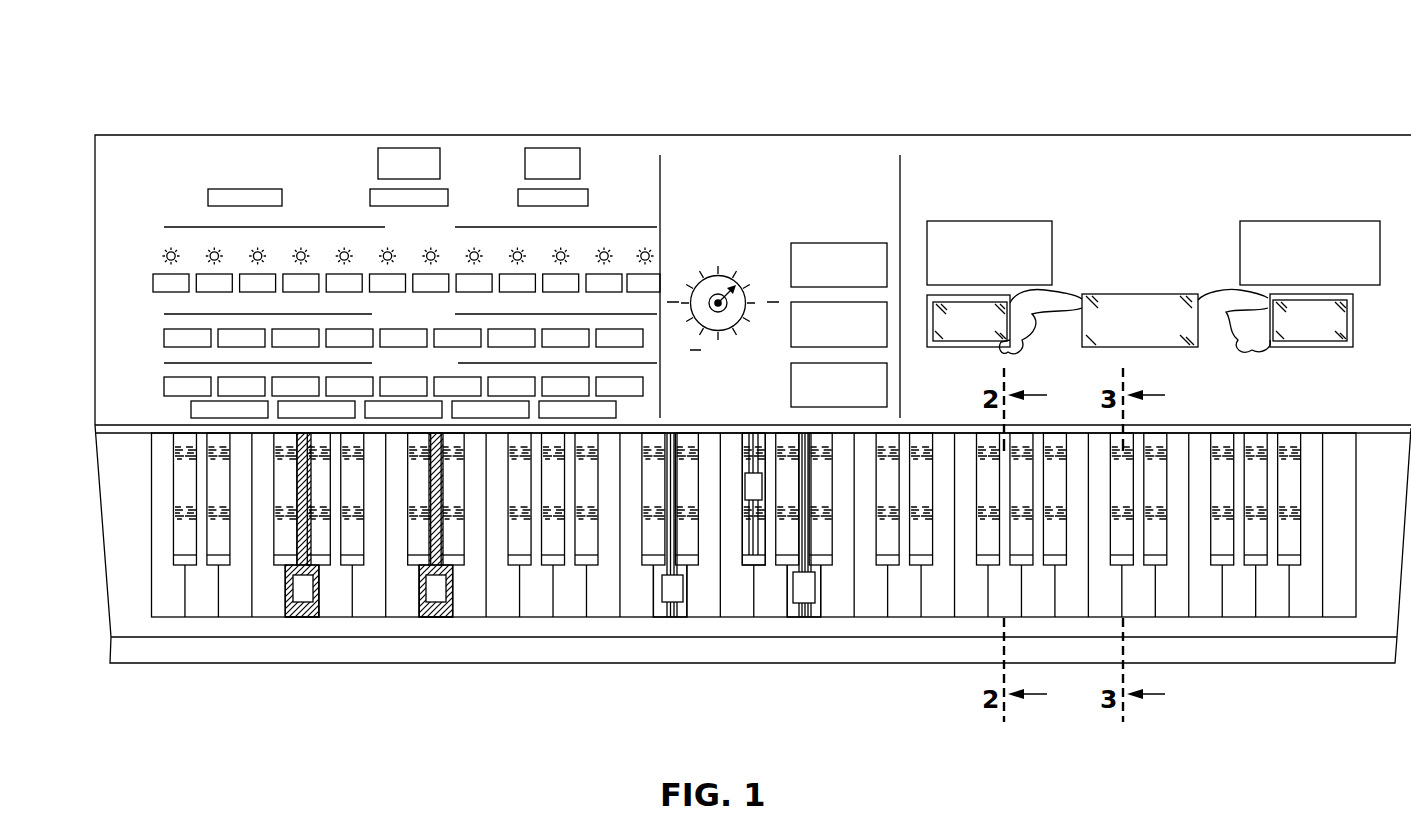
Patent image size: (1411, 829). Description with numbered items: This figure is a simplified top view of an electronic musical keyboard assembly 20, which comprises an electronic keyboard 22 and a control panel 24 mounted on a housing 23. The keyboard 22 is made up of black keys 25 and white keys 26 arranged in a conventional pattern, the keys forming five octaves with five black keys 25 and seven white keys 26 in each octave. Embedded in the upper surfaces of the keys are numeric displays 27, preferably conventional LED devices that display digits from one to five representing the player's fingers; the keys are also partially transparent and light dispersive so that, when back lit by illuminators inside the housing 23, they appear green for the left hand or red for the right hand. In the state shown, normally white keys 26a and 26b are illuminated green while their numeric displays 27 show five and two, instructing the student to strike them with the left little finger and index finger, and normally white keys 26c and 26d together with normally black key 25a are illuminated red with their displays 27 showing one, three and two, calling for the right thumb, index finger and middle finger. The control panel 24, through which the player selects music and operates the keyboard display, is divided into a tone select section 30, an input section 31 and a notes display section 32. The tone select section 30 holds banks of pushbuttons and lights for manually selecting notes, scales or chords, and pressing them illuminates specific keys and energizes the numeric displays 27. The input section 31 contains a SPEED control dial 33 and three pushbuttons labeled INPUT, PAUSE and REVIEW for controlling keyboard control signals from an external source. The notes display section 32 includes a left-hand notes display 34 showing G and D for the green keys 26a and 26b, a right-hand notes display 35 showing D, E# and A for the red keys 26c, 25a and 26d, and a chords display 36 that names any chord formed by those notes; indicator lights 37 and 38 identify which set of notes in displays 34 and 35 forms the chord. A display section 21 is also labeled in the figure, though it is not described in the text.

The electronic musical keyboard assembly 20 is at (180, 99).
The display section 21 is at (970, 172).
The electronic keyboard 22 is at (125, 538).
The housing 23 is at (647, 155).
The control panel 24 is at (125, 260).
The black keys 25 is at (553, 527).
The black key 25a is at (747, 558).
The white keys 26 is at (207, 603).
The white key 26a is at (313, 617).
The white key 26b is at (452, 617).
The white key 26c is at (677, 617).
The white key 26d is at (795, 603).
The numeric displays 27 is at (745, 472).
The tone select section 30 is at (348, 137).
The input section 31 is at (780, 160).
The notes display section 32 is at (1180, 175).
The SPEED control dial 33 is at (705, 276).
The left-hand notes display 34 is at (968, 341).
The right-hand notes display 35 is at (1327, 339).
The chords display 36 is at (1178, 328).
The indicator light 37 is at (987, 231).
The indicator light 38 is at (1312, 231).